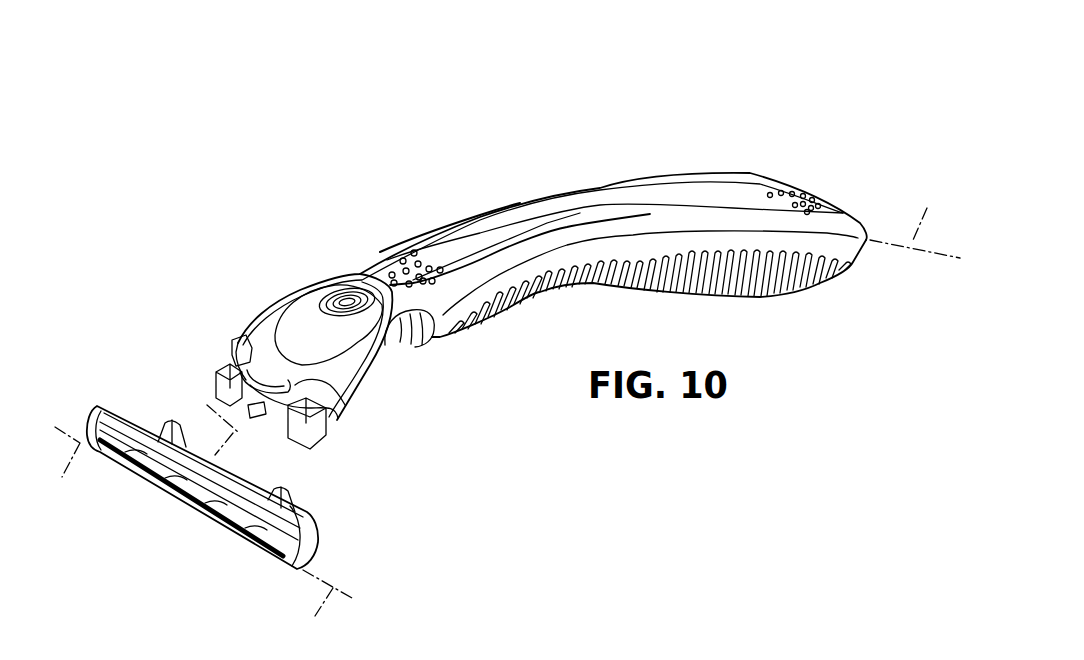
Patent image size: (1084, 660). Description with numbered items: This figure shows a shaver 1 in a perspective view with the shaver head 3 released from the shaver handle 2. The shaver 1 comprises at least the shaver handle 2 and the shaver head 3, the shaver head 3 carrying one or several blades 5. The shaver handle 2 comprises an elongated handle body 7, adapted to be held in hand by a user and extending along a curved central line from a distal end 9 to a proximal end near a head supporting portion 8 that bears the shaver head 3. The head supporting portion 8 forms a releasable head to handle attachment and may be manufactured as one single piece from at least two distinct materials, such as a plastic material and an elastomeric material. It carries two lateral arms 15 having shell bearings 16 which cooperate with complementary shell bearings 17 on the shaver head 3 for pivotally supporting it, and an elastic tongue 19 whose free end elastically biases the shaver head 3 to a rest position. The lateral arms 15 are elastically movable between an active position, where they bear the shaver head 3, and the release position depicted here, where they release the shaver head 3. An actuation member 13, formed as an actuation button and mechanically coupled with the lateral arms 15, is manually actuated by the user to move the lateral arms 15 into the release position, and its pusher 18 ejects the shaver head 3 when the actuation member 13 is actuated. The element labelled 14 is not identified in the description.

The shaver 1 is at (412, 152).
The shaver handle 2 is at (513, 130).
The shaver head 3 is at (88, 405).
The blades 5 is at (238, 541).
The handle body 7 is at (577, 193).
The head supporting portion 8 is at (272, 270).
The distal end 9 is at (860, 223).
The actuation member 13 is at (311, 313).
The neck 14 is at (390, 367).
The lateral arms 15 is at (262, 312).
The shell bearings 16 is at (217, 369).
The complementary shell bearings 17 is at (170, 422).
The pusher 18 is at (236, 360).
The elastic tongue 19 is at (256, 416).